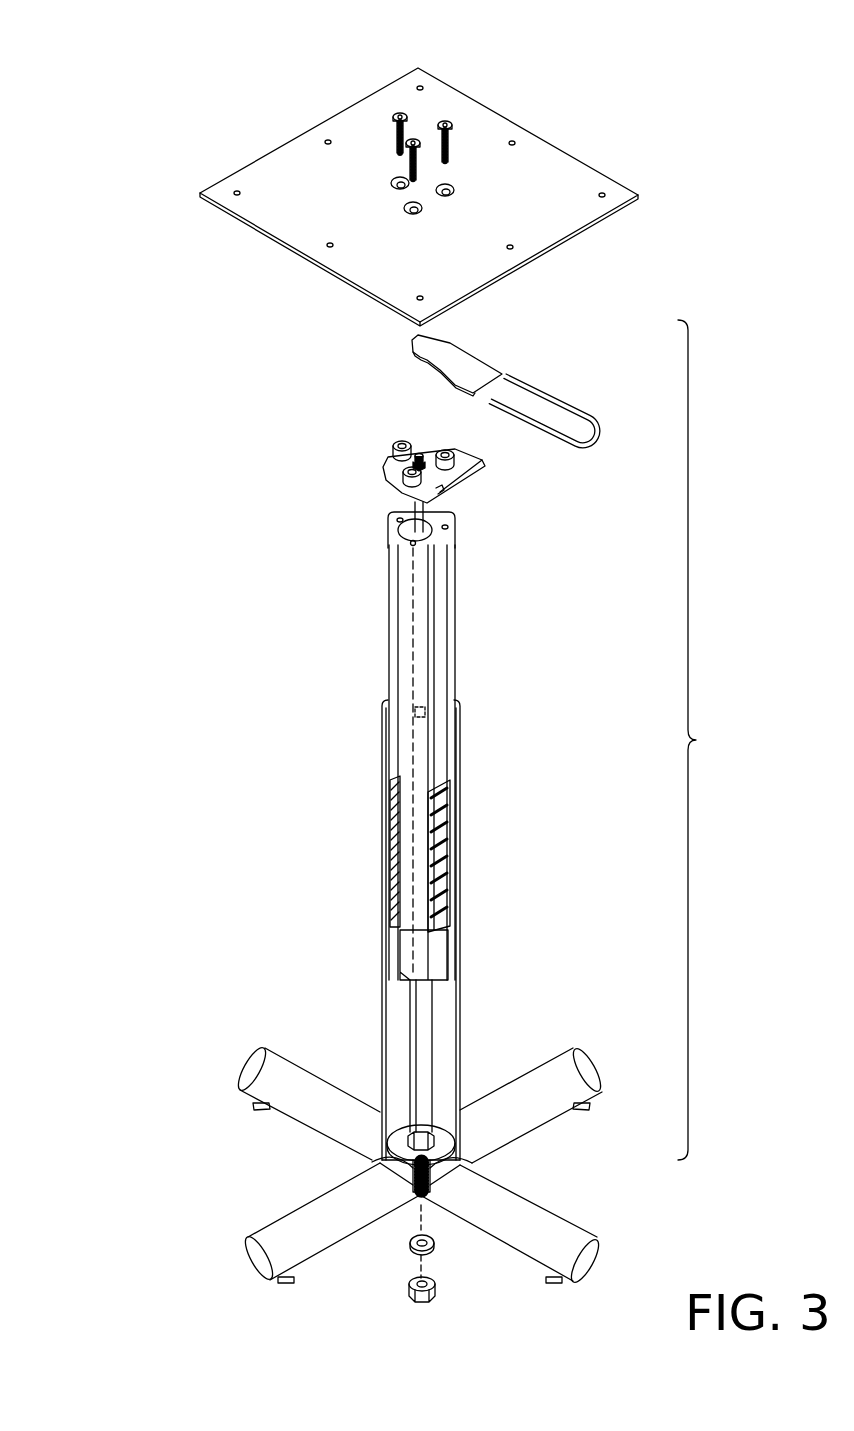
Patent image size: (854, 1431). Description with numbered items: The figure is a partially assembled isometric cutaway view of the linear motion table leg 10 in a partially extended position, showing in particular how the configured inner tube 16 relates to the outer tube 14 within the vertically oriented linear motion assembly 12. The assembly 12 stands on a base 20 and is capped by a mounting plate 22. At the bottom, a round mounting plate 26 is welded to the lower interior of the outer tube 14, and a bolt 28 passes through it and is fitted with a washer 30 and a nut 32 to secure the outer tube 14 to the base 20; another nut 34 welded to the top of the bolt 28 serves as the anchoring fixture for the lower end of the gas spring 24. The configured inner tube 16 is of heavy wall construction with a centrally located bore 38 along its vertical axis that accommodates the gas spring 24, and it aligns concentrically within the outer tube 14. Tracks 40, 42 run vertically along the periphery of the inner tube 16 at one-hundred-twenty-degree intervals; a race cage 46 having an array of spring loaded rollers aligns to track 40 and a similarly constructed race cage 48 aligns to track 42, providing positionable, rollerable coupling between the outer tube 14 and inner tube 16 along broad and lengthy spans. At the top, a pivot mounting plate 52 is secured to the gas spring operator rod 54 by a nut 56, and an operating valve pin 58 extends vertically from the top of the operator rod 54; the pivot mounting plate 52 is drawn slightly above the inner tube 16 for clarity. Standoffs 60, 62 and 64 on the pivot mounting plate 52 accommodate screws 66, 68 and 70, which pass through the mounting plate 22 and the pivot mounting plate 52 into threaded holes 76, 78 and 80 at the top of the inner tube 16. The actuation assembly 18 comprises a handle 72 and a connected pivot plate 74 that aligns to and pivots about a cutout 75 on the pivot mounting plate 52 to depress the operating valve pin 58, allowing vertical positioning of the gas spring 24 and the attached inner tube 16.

The linear motion table leg 10 is at (135, 118).
The vertically oriented linear motion assembly 12 is at (710, 740).
The outer tube 14 is at (472, 997).
The configured inner tube 16 is at (428, 762).
The actuation assembly 18 is at (531, 387).
The base 20 is at (425, 1127).
The mounting plate 22 is at (252, 237).
The gas spring 24 is at (425, 1050).
The round mounting plate 26 is at (497, 1207).
The bolt 28 is at (414, 1190).
The washer 30 is at (412, 1246).
The nut 32 is at (430, 1285).
The nut 34 is at (413, 1138).
The bore 38 is at (410, 517).
The track 40 is at (427, 562).
The track 42 is at (421, 546).
The race cage 46 is at (455, 807).
The race cage 48 is at (388, 781).
The pivot mounting plate 52 is at (441, 453).
The operator rod 54 is at (436, 515).
The nut 56 is at (408, 460).
The operating valve pin 58 is at (419, 453).
The standoff 60 is at (404, 477).
The standoff 62 is at (396, 444).
The standoff 64 is at (454, 457).
The screw 66 is at (408, 163).
The screw 68 is at (396, 131).
The screw 70 is at (450, 147).
The handle 72 is at (565, 412).
The pivot plate 74 is at (475, 367).
The cutout 75 is at (440, 488).
The threaded hole 76 is at (410, 546).
The threaded hole 78 is at (397, 519).
The threaded hole 80 is at (449, 529).